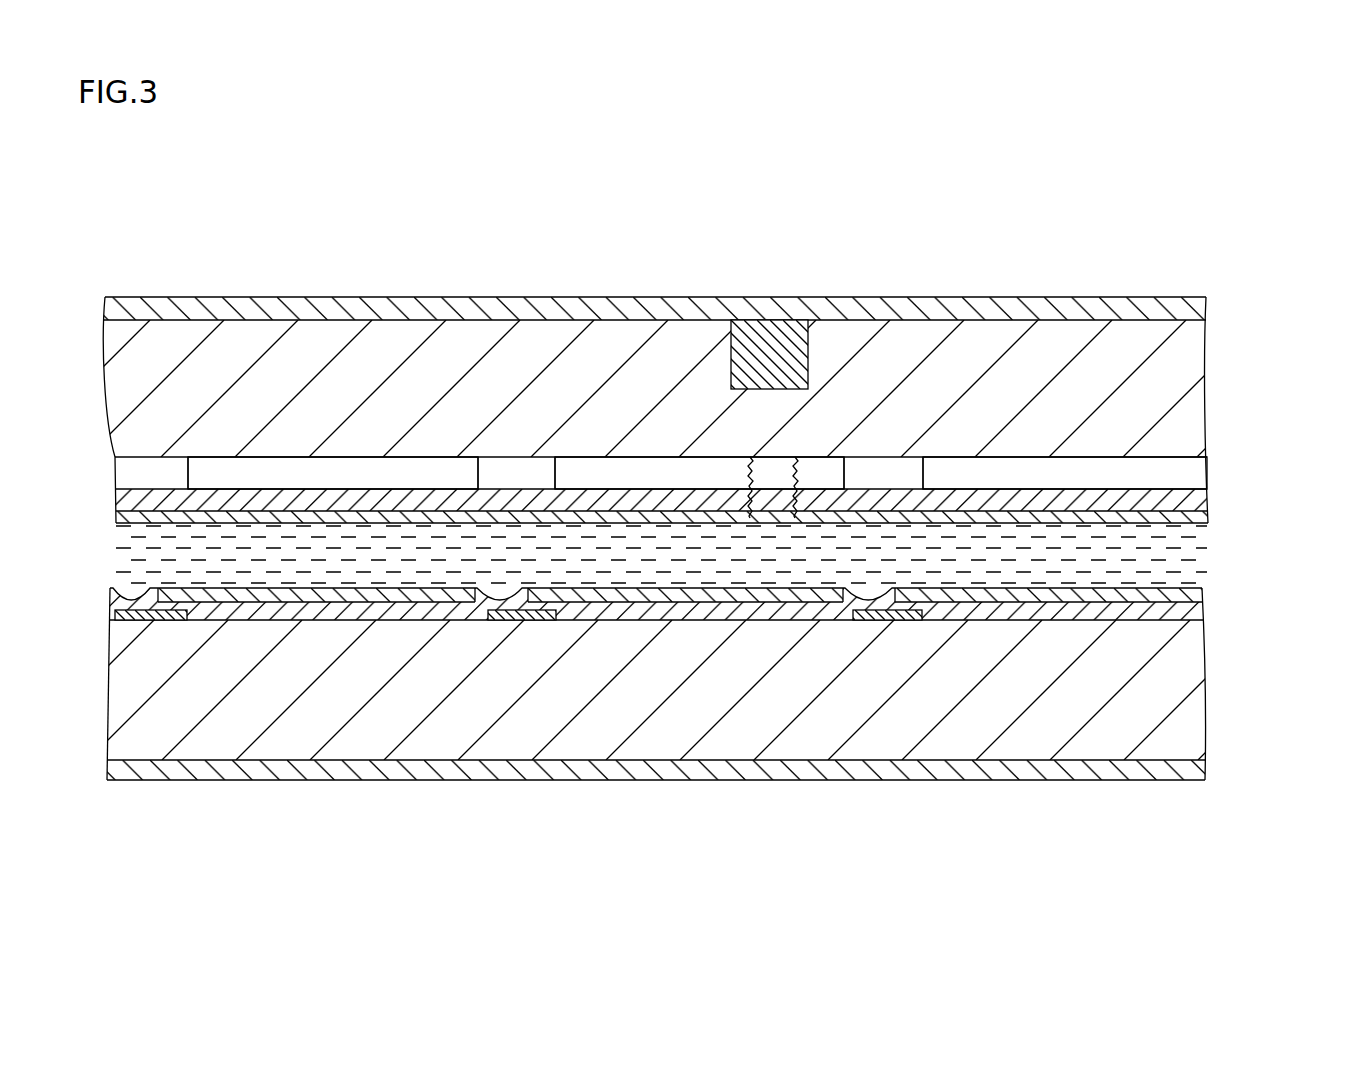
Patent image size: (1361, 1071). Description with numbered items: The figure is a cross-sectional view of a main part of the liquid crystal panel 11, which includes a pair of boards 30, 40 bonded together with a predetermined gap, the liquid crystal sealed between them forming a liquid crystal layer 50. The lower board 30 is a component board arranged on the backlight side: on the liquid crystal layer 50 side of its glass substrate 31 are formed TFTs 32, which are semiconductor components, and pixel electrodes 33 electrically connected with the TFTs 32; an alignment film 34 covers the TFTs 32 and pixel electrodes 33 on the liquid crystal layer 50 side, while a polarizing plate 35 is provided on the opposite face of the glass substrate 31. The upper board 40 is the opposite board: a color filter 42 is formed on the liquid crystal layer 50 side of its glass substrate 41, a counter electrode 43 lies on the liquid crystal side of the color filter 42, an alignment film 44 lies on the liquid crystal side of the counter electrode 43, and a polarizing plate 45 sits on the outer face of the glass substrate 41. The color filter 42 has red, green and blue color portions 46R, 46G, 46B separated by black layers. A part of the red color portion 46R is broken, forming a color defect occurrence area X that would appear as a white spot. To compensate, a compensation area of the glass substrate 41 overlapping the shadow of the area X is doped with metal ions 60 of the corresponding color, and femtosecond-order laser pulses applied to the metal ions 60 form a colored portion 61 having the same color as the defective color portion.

The liquid crystal panel 11 is at (1125, 277).
The board 30 is at (1295, 618).
The glass substrate 31 is at (1185, 735).
The TFT 32 is at (163, 618).
The pixel electrode 33 is at (332, 608).
The alignment film 34 is at (1180, 593).
The polarizing plate 35 is at (1178, 772).
The board 40 is at (1295, 523).
The glass substrate 41 is at (1180, 402).
The color filter 42 is at (1228, 473).
The counter electrode 43 is at (1190, 502).
The alignment film 44 is at (1193, 517).
The polarizing plate 45 is at (1182, 312).
The color portion of B (blue) 46B is at (290, 475).
The color portion of R (red) 46R is at (640, 470).
The color portion of G (green) 46G is at (1018, 470).
The liquid crystal layer 50 is at (1180, 553).
The metal ions 60 is at (817, 307).
The colored portion 61 is at (803, 367).
The color defect occurrence area X is at (753, 487).